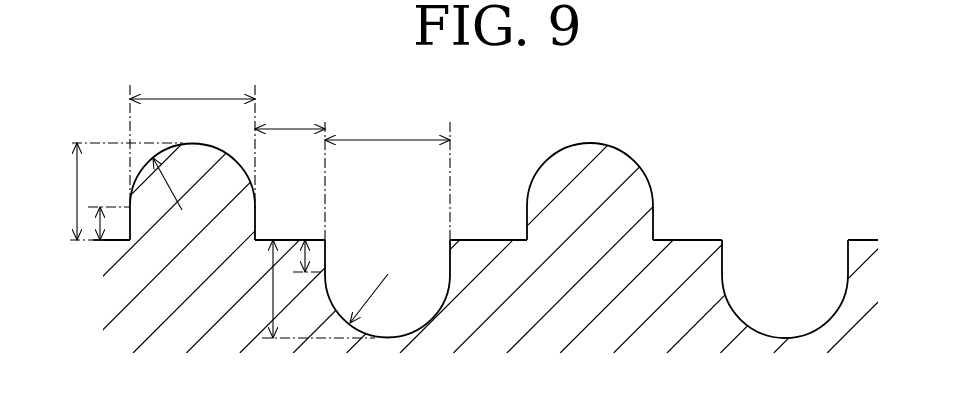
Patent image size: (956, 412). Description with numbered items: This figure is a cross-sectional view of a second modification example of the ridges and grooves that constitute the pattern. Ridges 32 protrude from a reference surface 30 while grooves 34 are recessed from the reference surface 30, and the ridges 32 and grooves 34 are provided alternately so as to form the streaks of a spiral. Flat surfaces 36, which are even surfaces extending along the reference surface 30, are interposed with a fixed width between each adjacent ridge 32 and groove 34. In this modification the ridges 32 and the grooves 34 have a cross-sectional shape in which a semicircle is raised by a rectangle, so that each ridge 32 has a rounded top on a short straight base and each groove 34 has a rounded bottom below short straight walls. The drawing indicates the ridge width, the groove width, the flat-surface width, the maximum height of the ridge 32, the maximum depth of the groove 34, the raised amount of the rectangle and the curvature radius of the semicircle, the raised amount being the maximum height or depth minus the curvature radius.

The reference surface 30 is at (863, 240).
The ridge 32 is at (207, 143).
The groove 34 is at (447, 292).
The flat surface 36 is at (310, 238).